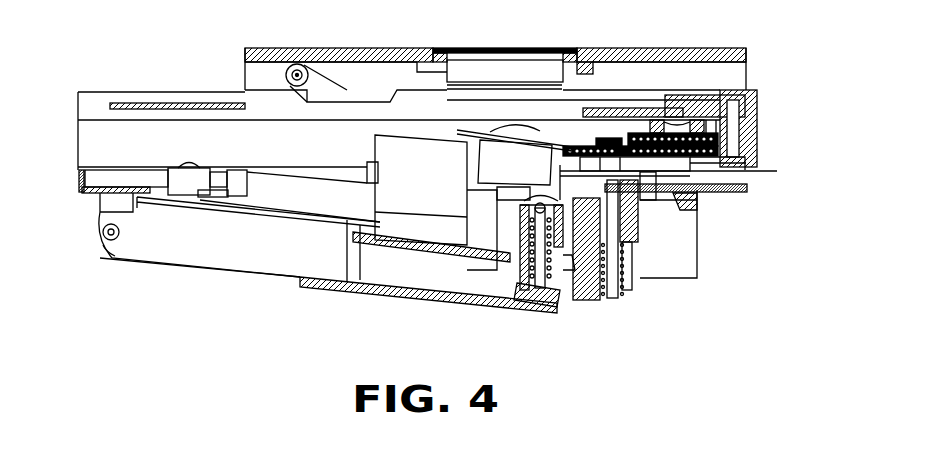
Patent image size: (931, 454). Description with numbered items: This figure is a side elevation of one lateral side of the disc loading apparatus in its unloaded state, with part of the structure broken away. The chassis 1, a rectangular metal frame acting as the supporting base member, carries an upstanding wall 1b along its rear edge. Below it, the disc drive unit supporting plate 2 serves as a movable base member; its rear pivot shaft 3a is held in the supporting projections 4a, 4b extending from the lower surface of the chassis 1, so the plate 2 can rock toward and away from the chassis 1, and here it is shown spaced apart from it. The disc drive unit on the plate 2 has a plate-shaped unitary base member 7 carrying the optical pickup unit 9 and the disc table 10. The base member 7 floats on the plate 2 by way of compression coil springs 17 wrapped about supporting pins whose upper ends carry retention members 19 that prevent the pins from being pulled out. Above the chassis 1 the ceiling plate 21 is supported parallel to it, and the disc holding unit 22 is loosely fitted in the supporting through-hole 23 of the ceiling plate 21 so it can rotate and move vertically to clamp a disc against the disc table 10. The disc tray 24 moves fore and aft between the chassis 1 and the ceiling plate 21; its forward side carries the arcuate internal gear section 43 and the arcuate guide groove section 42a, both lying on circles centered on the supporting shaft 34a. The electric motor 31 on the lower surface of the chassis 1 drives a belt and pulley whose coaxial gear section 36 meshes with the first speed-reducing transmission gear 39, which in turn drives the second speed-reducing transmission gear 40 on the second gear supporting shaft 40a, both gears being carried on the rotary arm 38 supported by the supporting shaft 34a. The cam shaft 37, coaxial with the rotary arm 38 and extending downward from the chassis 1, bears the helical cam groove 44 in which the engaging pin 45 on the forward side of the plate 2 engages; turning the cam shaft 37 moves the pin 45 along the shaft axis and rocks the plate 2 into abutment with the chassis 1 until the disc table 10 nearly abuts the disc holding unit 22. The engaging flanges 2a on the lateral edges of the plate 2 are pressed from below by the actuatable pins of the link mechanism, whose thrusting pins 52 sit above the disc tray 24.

The chassis 1 is at (748, 188).
The upstanding wall 1b is at (80, 183).
The disc drive unit supporting plate 2 is at (248, 260).
The engaging flanges 2a is at (307, 226).
The pivot shaft 3a is at (107, 243).
The supporting projection 4a is at (101, 203).
The supporting projection 4b is at (116, 242).
The unitary base member 7 is at (257, 198).
The optical pickup unit 9 is at (408, 152).
The disc table 10 is at (510, 137).
The compression coil springs 17 is at (521, 303).
The retention members 19 is at (175, 168).
The ceiling plate 21 is at (697, 48).
The disc holding unit 22 is at (530, 68).
The supporting through-hole 23 is at (590, 42).
The disc tray 24 is at (199, 103).
The electric motor 31 is at (678, 270).
The supporting shaft 34a is at (627, 225).
The gear section 36 is at (670, 193).
The cam shaft 37 is at (640, 237).
The rotary arm 38 is at (690, 173).
The first speed-reducing transmission gear 39 is at (608, 140).
The second speed-reducing transmission gear 40 is at (750, 138).
The second gear supporting shaft 40a is at (742, 163).
The arcuate guide groove section 42a is at (683, 107).
The arcuate internal gear section 43 is at (737, 95).
The helical cam groove 44 is at (613, 302).
The engaging pin 45 is at (576, 300).
The thrusting pins 52 is at (302, 64).